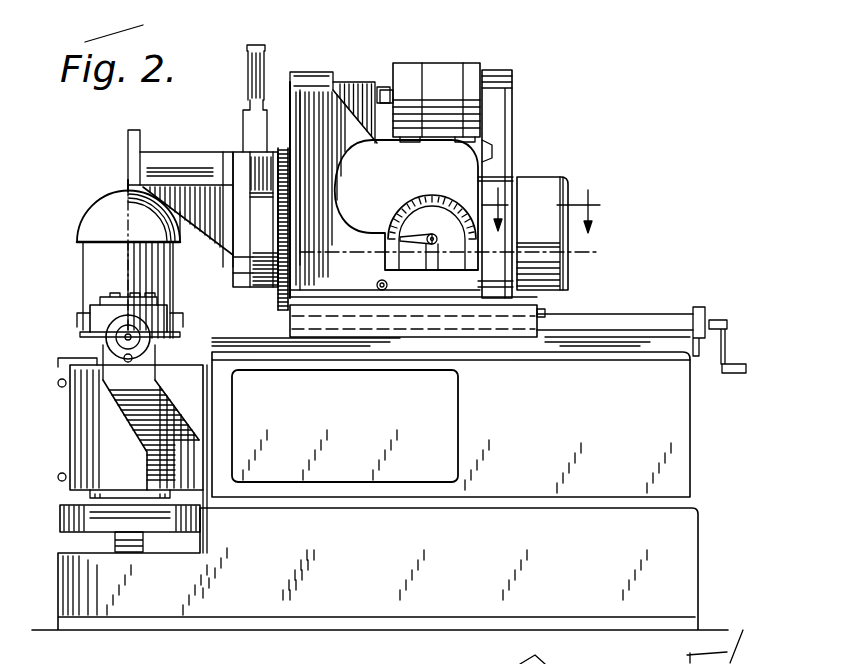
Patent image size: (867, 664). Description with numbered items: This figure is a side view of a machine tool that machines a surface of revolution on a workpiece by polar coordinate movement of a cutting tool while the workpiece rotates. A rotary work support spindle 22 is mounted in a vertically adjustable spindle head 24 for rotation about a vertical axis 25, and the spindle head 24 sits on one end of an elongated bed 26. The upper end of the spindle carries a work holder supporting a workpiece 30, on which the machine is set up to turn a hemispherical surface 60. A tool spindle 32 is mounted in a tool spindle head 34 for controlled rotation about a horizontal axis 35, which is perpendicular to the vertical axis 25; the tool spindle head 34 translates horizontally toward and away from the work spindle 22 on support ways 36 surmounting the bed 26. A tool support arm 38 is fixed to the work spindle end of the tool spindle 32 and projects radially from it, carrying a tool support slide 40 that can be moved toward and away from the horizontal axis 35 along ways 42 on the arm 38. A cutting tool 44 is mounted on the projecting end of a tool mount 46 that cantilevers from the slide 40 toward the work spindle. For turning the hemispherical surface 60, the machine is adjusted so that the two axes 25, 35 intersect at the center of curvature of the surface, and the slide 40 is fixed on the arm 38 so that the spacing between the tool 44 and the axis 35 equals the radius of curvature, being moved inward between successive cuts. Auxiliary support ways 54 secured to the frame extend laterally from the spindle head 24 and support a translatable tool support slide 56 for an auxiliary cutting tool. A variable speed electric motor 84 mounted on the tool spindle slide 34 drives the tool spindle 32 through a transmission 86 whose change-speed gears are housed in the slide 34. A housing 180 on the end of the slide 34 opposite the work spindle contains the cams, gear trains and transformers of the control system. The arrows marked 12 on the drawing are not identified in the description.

The section line 12- 12 is at (630, 210).
The work support spindle 22 is at (170, 327).
The spindle head 24 is at (83, 419).
The vertical axis 25 is at (127, 267).
The bed 26 is at (418, 604).
The workpiece 30 is at (80, 212).
The tool spindle 32 is at (270, 290).
The tool spindle head 34 is at (334, 161).
The horizontal axis 35 is at (325, 254).
The support ways 36 is at (617, 323).
The tool support arm 38 is at (238, 124).
The tool support slide 40 is at (227, 167).
The ways 42 is at (246, 139).
The cutting tool 44 is at (124, 185).
The tool mount 46 is at (150, 163).
The auxiliary support ways 54 is at (82, 330).
The tool support slide 56 is at (147, 313).
The hemispherical surface 60 is at (180, 222).
The variable speed electric motor 84 is at (443, 82).
The transmission 86 is at (500, 153).
The housing 180 is at (548, 187).